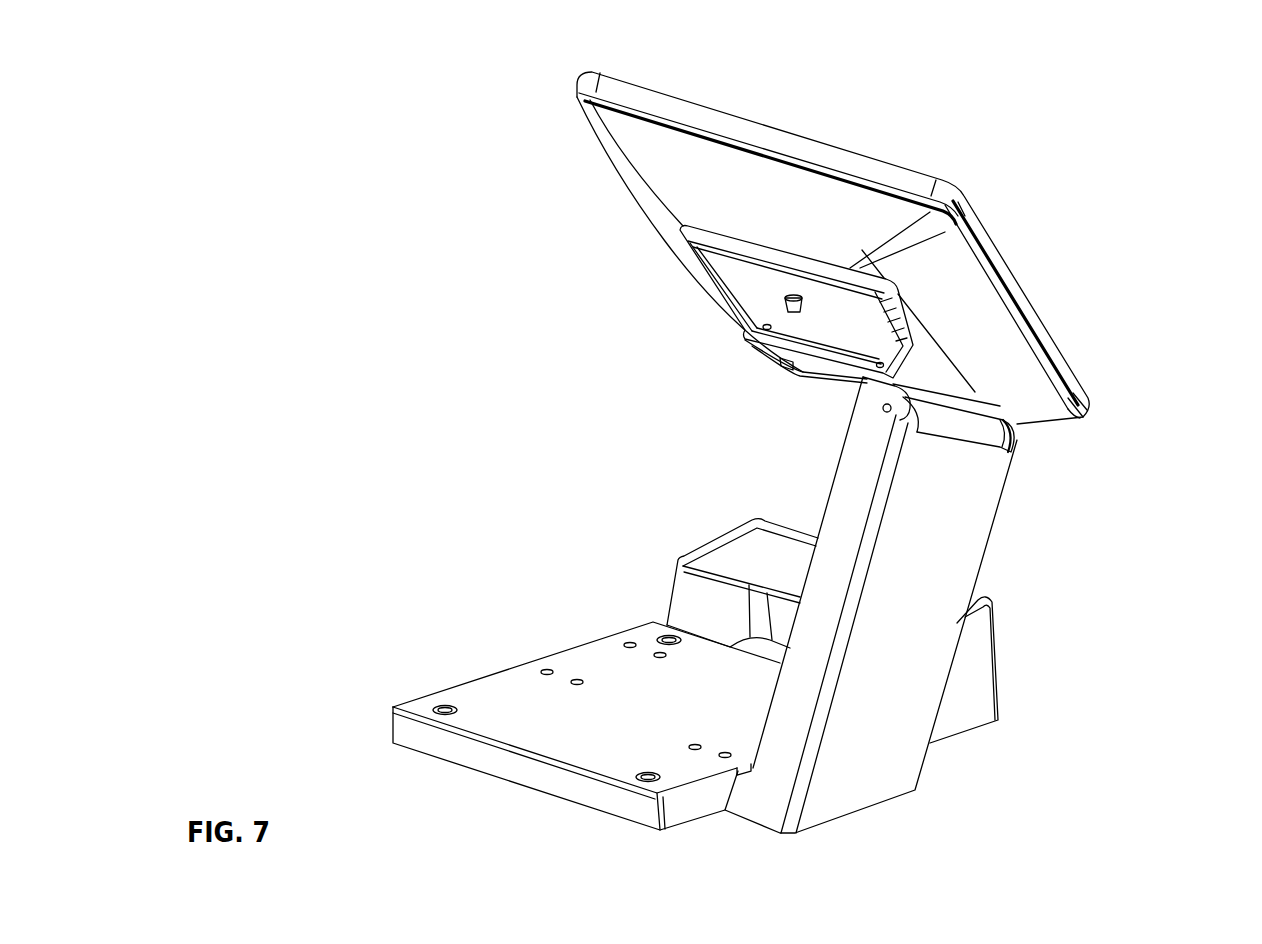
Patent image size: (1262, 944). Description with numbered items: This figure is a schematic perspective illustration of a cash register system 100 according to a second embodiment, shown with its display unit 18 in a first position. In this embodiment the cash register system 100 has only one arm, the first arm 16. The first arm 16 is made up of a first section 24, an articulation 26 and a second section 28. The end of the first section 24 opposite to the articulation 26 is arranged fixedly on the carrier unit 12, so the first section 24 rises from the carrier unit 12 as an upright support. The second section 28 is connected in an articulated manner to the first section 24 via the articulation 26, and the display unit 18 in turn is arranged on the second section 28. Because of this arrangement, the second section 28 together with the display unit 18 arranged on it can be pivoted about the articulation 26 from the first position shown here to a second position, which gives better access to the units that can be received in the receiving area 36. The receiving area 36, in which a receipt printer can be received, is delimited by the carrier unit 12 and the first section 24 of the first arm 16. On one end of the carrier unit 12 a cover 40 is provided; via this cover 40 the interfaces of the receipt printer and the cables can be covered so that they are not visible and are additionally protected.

The cash register system 100 is at (940, 103).
The first arm 16 is at (1143, 428).
The display unit 18 is at (985, 303).
The second section 28 is at (732, 276).
The receiving area 36 is at (628, 472).
The articulation 26 is at (1027, 443).
The first section 24 is at (888, 753).
The cover 40 is at (747, 543).
The carrier unit 12 is at (491, 696).